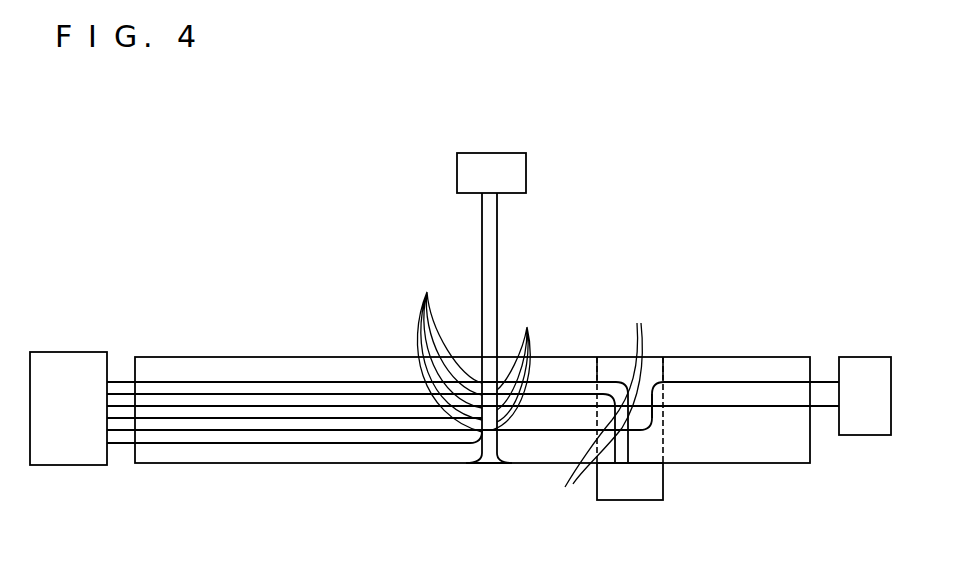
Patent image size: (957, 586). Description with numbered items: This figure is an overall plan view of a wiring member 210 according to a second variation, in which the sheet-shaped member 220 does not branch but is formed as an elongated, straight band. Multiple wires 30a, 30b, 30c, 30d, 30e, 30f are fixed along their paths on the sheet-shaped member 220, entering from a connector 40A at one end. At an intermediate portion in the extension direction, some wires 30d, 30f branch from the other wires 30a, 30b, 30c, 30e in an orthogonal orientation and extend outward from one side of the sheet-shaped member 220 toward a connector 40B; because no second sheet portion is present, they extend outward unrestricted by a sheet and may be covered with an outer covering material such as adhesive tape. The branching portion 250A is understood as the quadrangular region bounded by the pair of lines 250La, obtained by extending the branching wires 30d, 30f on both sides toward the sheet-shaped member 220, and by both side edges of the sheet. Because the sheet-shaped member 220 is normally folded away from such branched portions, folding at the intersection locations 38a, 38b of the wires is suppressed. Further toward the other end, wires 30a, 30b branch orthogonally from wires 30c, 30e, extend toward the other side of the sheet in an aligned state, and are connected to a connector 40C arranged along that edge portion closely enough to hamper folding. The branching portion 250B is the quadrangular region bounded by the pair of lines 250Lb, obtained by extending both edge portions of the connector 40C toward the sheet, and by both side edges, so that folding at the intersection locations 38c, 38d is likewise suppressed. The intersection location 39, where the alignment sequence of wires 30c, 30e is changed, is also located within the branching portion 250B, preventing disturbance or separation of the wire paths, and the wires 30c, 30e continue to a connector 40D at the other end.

The wiring member 210 is at (355, 277).
The sheet-shaped member 220 is at (386, 357).
The branching portion 250A is at (495, 427).
The branching portion 250B is at (655, 357).
The lines 250La is at (472, 465).
The lines 250Lb is at (597, 372).
The wire 30a is at (152, 381).
The wire 30b is at (208, 393).
The wire 30c is at (267, 405).
The wire 30d is at (322, 417).
The wire 30e is at (192, 431).
The wire 30f is at (252, 444).
The intersection location 38a is at (522, 363).
The intersection location 38b is at (447, 346).
The intersection location 38c is at (631, 362).
The intersection location 38d is at (584, 471).
The intersection location 39 is at (653, 412).
The connector 40A is at (70, 352).
The connector 40B is at (528, 172).
The connector 40C is at (664, 488).
The connector 40D is at (863, 436).